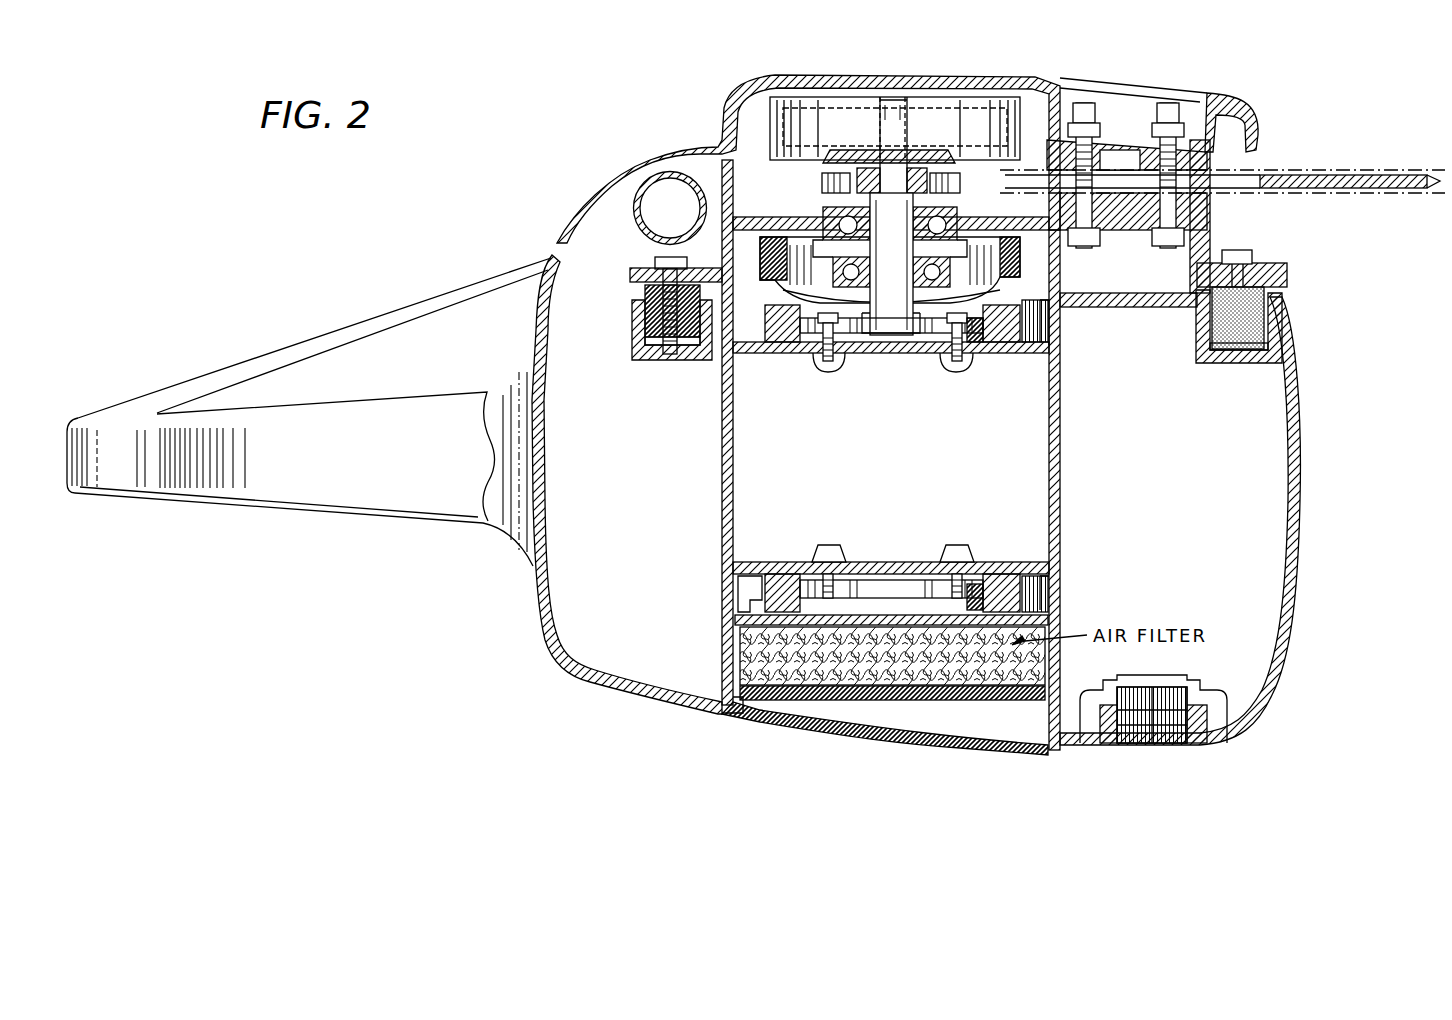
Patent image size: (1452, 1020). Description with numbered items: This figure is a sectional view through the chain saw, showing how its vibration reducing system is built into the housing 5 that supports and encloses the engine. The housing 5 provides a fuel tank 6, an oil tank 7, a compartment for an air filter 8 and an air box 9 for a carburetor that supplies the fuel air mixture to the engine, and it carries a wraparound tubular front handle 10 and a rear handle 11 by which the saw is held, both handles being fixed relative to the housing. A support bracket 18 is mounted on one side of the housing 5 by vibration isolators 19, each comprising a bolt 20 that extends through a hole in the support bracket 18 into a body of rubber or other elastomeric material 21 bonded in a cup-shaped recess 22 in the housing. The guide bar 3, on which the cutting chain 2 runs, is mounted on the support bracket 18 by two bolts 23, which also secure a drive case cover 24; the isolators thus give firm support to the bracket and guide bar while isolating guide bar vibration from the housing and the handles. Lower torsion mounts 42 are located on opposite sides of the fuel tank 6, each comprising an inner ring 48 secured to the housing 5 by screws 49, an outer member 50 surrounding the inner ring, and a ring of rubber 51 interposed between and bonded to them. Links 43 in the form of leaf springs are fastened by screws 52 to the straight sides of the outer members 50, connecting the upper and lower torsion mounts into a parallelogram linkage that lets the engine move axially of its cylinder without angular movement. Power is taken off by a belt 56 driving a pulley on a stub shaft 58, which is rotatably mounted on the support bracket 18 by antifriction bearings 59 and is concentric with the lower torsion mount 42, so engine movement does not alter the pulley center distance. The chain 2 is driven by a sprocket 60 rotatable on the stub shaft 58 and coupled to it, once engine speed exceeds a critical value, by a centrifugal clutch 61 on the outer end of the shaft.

The cutting chain 2 is at (1390, 195).
The guide bar 3 is at (1290, 177).
The housing 5 is at (1300, 476).
The fuel tank 6 is at (899, 495).
The oil tank 7 is at (1176, 495).
The air filter 8 is at (966, 692).
The air box 9 is at (632, 531).
The front handle 10 is at (645, 212).
The rear handle 11 is at (300, 498).
The support bracket 18 is at (1208, 223).
The vibration isolators 19 is at (626, 362).
The bolt 20 is at (645, 271).
The elastomeric material 21 is at (643, 323).
The cup-shaped recess 22 is at (674, 361).
The bolts 23 is at (1142, 264).
The drive case cover 24 is at (905, 74).
The lower torsion mounts 42 is at (785, 360).
The links 43 is at (1050, 348).
The inner rings 48 is at (846, 350).
The screws 49 is at (826, 363).
The outer member 50 is at (1003, 342).
The ring of rubber 51 is at (976, 336).
The screws 52 is at (1050, 323).
The belt 56 is at (1010, 275).
The stub shaft 58 is at (897, 336).
The antifriction bearings 59 is at (840, 216).
The sprocket 60 is at (822, 182).
The centrifugal clutch 61 is at (800, 100).